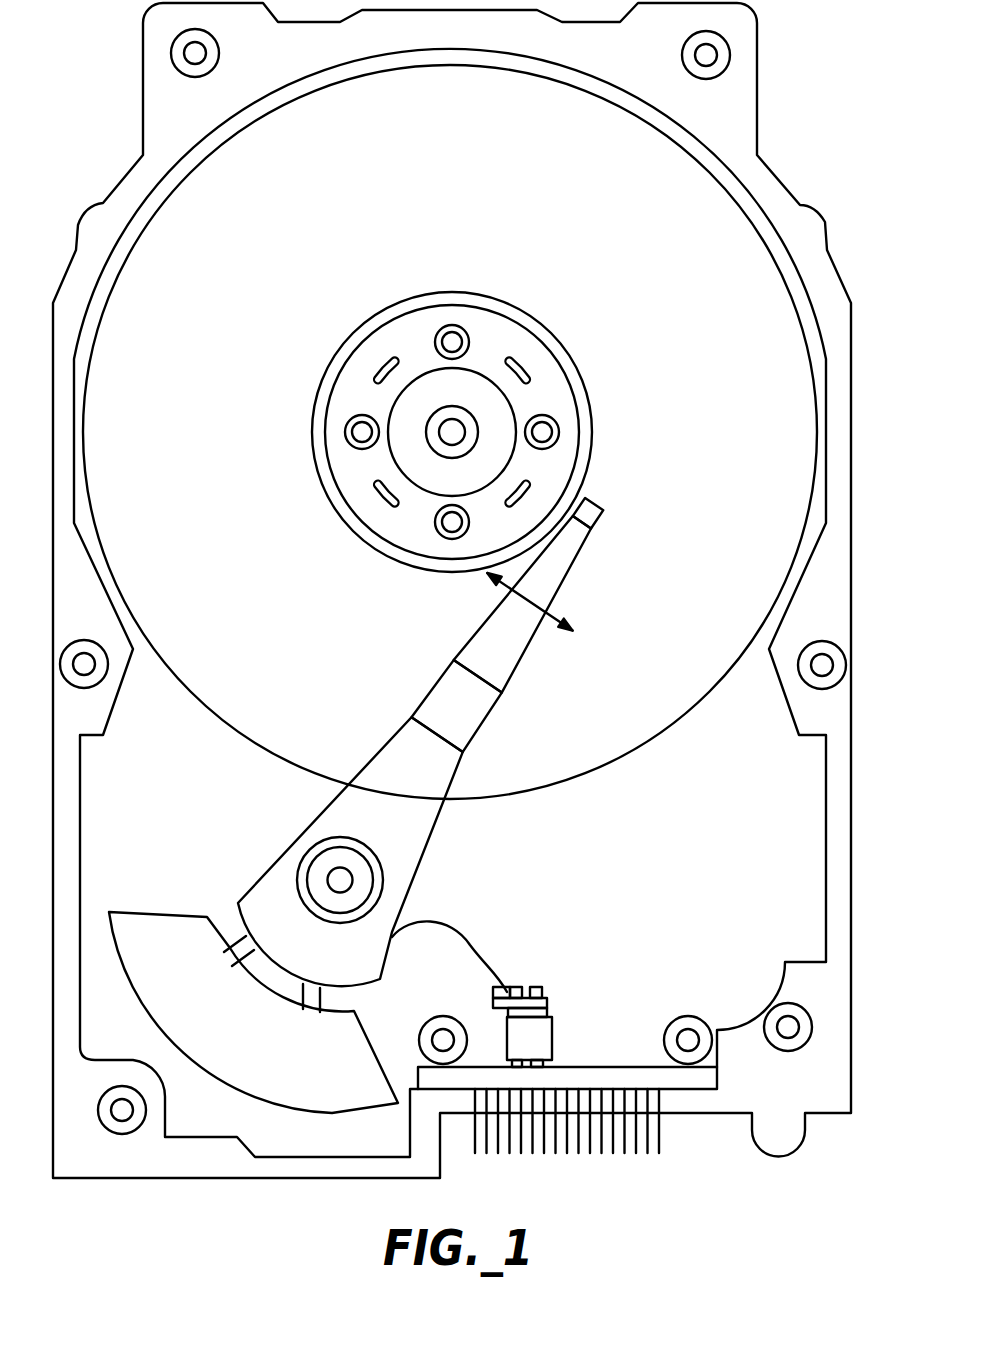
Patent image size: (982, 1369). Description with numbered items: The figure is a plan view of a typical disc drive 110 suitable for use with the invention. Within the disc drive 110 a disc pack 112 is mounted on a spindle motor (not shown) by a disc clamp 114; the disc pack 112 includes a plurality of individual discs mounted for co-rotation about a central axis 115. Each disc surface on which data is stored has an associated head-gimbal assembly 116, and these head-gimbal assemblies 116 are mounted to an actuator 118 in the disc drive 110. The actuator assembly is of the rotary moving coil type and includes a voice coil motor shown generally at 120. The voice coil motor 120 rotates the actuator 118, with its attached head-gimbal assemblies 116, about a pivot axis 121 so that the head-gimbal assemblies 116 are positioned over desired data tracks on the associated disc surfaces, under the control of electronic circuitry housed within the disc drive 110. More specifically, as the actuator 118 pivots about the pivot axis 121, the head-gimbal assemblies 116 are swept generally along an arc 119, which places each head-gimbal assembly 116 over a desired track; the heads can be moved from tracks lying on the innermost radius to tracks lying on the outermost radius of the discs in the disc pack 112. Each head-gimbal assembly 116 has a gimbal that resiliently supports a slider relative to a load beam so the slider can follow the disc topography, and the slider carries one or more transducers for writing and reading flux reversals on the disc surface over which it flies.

The disc drive 110 is at (797, 50).
The disc pack 112 is at (478, 137).
The disc clamp 114 is at (367, 315).
The central axis 115 is at (452, 432).
The head-gimbal assembly 116 is at (603, 495).
The actuator 118 is at (487, 757).
The arc 119 is at (537, 587).
The voice coil motor 120 is at (180, 910).
The pivot axis 121 is at (340, 878).